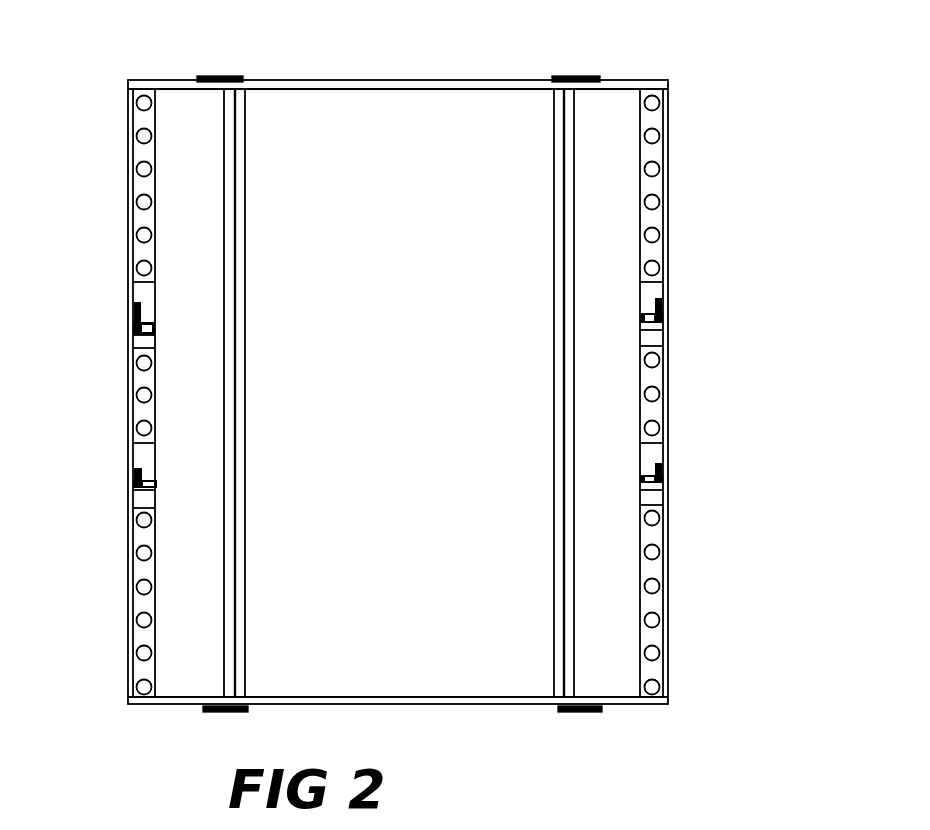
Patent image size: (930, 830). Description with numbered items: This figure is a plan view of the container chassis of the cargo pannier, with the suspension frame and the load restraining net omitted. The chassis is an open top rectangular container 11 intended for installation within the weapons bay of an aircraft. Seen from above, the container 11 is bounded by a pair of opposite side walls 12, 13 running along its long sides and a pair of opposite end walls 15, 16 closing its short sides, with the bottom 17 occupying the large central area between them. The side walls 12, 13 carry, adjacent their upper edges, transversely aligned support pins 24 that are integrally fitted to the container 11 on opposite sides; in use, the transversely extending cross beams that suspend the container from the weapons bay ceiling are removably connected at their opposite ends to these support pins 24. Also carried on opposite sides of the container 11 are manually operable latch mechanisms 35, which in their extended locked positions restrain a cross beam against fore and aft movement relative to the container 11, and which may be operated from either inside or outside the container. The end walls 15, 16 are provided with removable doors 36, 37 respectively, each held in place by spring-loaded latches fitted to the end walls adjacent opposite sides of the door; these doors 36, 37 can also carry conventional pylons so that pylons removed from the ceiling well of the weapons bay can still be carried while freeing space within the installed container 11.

The open top rectangular container 11 is at (684, 74).
The side wall 12 is at (128, 428).
The side wall 13 is at (668, 425).
The end wall 15 is at (412, 82).
The end wall 16 is at (493, 703).
The bottom 17 is at (437, 428).
The support pin 24 is at (133, 313).
The latch mechanism 35 is at (160, 470).
The removable door 36 is at (517, 82).
The removable door 37 is at (432, 703).